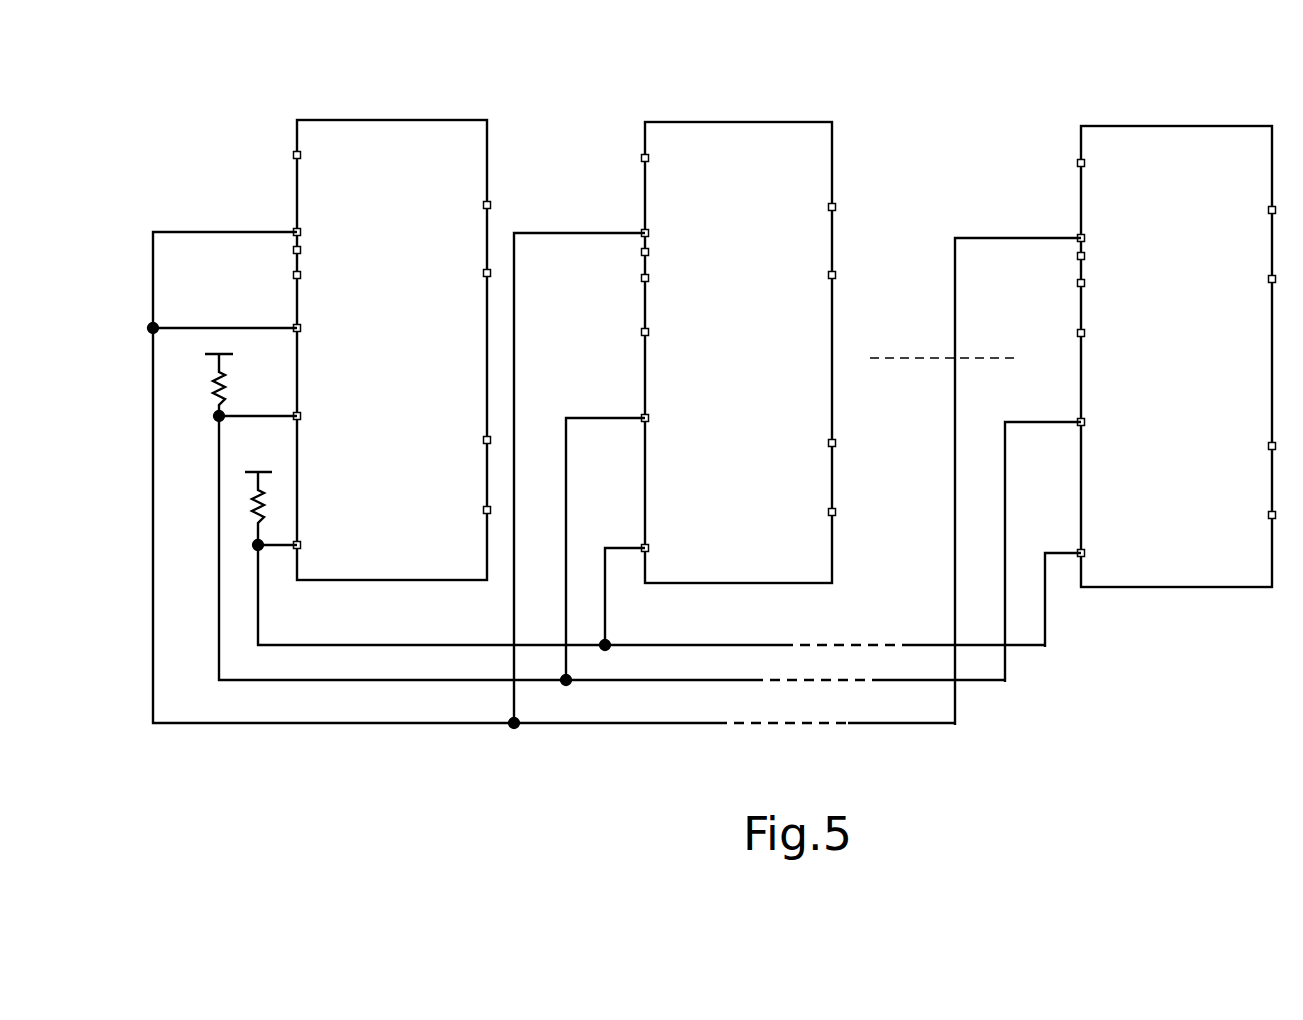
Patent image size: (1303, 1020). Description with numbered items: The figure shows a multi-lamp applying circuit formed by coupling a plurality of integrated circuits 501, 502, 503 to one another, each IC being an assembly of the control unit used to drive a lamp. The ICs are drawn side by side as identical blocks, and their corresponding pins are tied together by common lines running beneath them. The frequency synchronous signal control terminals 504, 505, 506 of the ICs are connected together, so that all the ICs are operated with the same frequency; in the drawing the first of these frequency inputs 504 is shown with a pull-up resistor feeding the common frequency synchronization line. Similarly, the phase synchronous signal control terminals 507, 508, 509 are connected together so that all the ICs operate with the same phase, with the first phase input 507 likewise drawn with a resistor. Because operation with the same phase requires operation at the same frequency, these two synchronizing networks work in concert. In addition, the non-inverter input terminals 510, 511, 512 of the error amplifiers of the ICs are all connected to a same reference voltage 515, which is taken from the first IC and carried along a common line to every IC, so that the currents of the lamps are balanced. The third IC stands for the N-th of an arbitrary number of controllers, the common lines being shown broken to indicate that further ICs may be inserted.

The integrated circuit 501 is at (385, 155).
The integrated circuit 502 is at (722, 148).
The integrated circuit 503 is at (1163, 152).
The frequency synchronous signal control terminal 504 is at (293, 422).
The frequency synchronous signal control terminal 505 is at (642, 412).
The frequency synchronous signal control terminal 506 is at (1078, 412).
The phase synchronous signal control terminal 507 is at (291, 552).
The phase synchronous signal control terminal 508 is at (637, 555).
The phase synchronous signal control terminal 509 is at (1082, 558).
The non-inverter input terminal of the error amplifier 510 is at (253, 232).
The non-inverter input terminal of the error amplifier 511 is at (605, 232).
The non-inverter input terminal of the error amplifier 512 is at (1017, 233).
The reference voltage 515 is at (207, 327).